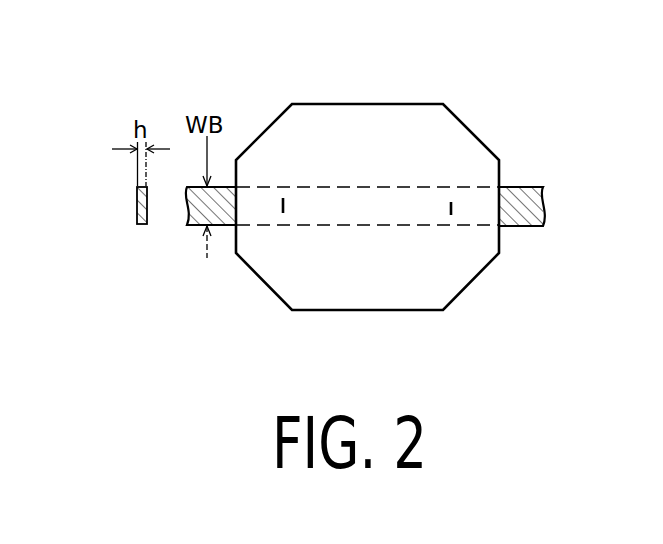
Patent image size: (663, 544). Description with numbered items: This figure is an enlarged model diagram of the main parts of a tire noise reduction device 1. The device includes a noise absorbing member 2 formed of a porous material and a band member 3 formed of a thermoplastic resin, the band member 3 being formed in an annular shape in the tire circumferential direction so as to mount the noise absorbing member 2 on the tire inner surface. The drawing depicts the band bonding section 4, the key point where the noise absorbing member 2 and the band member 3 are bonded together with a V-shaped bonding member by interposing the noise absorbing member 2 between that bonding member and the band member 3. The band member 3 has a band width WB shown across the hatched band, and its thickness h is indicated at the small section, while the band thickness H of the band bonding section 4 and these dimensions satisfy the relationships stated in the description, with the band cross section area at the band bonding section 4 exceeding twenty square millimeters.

The tire noise reduction device 1 is at (418, 103).
The noise absorbing member 2 is at (331, 130).
The band member 3 is at (137, 217).
The band bonding section 4 is at (453, 207).